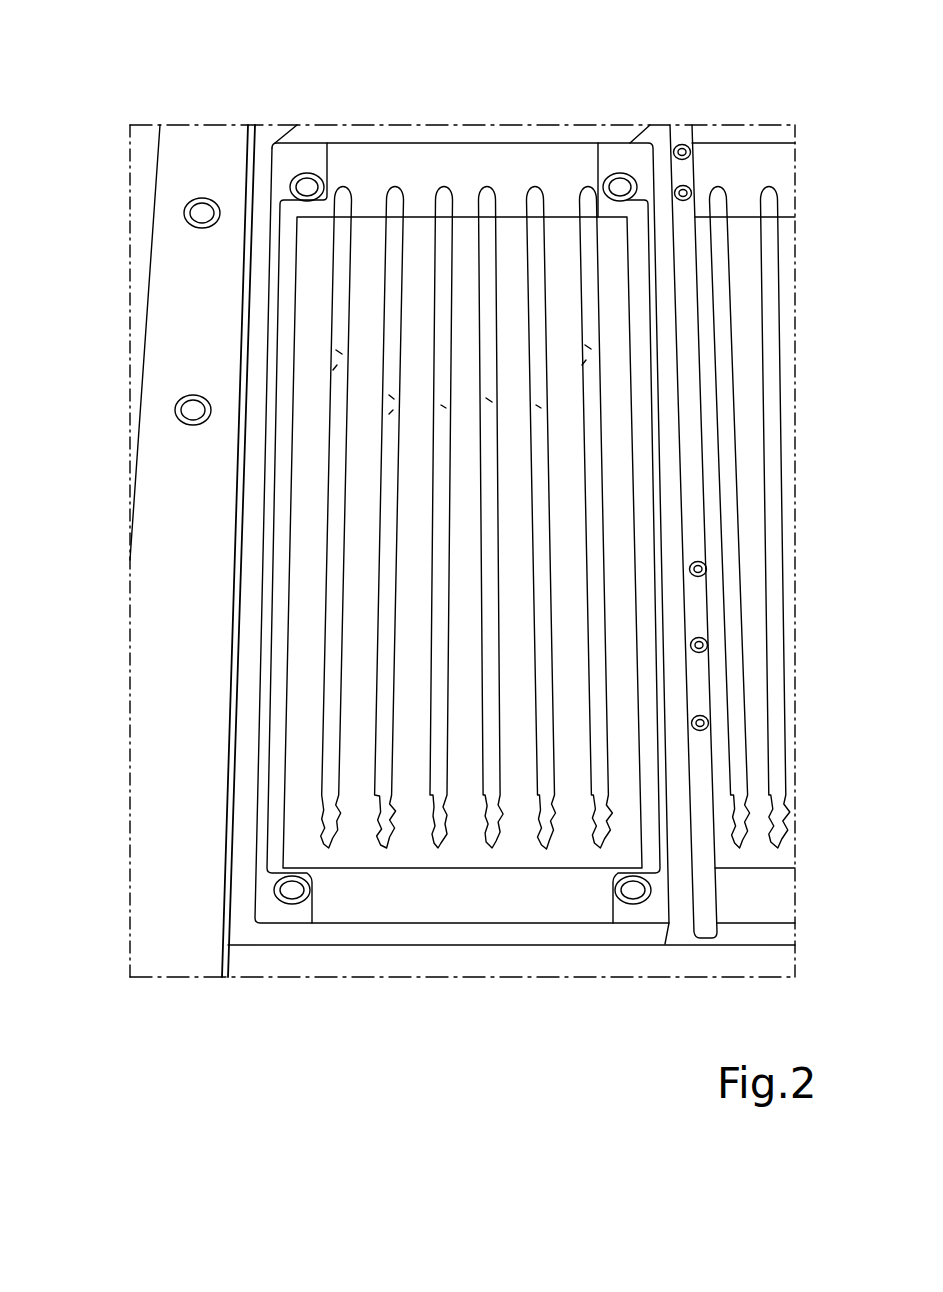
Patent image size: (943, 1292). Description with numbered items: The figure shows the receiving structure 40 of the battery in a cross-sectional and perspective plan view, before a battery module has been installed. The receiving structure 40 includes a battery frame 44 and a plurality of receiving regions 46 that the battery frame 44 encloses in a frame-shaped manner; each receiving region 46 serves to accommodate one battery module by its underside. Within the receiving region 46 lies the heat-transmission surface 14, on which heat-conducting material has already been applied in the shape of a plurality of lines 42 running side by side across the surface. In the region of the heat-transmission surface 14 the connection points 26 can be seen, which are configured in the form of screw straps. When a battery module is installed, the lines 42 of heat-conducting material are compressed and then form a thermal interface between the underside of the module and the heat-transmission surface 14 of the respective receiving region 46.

The receiving structure 40 is at (731, 92).
The receiving region 46 is at (268, 690).
The heat-transmission surface 14 is at (463, 850).
The lines 42 is at (597, 617).
The connection points 26 is at (307, 187).
The battery frame 44 is at (397, 932).